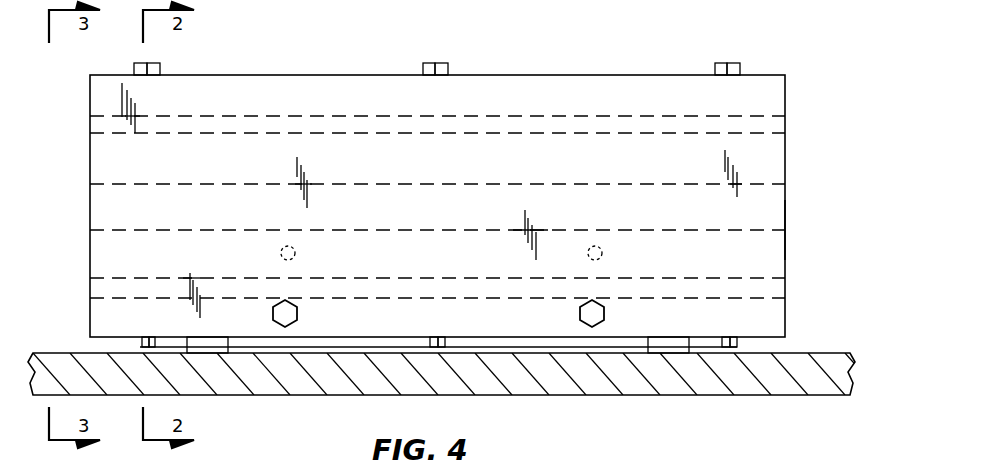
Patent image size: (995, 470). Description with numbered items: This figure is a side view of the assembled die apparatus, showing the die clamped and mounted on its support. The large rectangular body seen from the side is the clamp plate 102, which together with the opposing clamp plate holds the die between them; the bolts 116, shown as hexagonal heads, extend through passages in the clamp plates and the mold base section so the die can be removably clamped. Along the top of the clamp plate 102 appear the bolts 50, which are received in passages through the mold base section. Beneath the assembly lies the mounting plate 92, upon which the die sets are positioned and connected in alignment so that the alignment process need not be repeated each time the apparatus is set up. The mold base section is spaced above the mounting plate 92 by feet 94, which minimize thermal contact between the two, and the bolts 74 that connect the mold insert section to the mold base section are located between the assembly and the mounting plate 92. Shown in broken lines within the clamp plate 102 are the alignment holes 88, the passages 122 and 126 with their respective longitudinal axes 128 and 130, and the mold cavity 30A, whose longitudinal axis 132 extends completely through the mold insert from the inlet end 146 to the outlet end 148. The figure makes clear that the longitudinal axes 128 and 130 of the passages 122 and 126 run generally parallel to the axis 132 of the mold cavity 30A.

The mold cavity 30A is at (780, 222).
The bolts 50 is at (161, 69).
The bolts 74 is at (140, 347).
The alignment hole 88 is at (298, 253).
The mounting plate 92 is at (555, 390).
The feet 94 is at (215, 350).
The clamp plate 102 is at (563, 82).
The bolt 116 is at (297, 316).
The passage 122 is at (786, 120).
The passage 126 is at (785, 290).
The longitudinal axis 128 is at (88, 122).
The longitudinal axis 130 is at (88, 290).
The longitudinal axis 132 is at (88, 207).
The inlet end 146 is at (89, 219).
The outlet end 148 is at (785, 197).